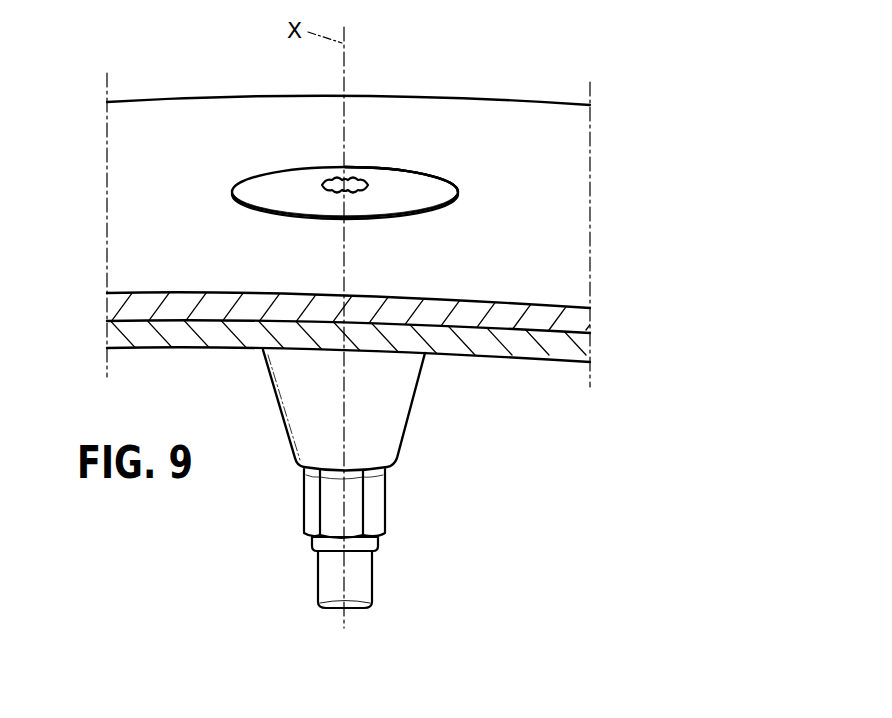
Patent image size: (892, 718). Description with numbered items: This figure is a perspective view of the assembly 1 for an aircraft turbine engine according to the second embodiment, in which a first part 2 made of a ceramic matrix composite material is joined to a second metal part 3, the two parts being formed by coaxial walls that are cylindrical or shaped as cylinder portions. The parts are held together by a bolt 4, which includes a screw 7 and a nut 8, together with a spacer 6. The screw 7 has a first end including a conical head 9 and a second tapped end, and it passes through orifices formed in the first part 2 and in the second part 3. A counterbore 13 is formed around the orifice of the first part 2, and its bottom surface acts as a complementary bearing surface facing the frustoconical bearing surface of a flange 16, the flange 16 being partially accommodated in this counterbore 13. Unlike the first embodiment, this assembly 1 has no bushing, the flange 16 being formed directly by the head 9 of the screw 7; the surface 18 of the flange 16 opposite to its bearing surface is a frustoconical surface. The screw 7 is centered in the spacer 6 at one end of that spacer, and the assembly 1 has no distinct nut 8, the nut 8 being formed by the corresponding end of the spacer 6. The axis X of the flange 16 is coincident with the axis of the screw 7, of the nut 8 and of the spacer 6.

The assembly 1 is at (636, 132).
The first part 2 is at (562, 260).
The second part 3 is at (562, 348).
The bolt 4 is at (404, 520).
The spacer 6 is at (375, 418).
The screw 7 is at (357, 572).
The nut 8 is at (338, 495).
The conical head 9 is at (292, 190).
The counterbore 13 is at (232, 195).
The flange 16 is at (403, 193).
The surface of the flange 18 is at (403, 193).